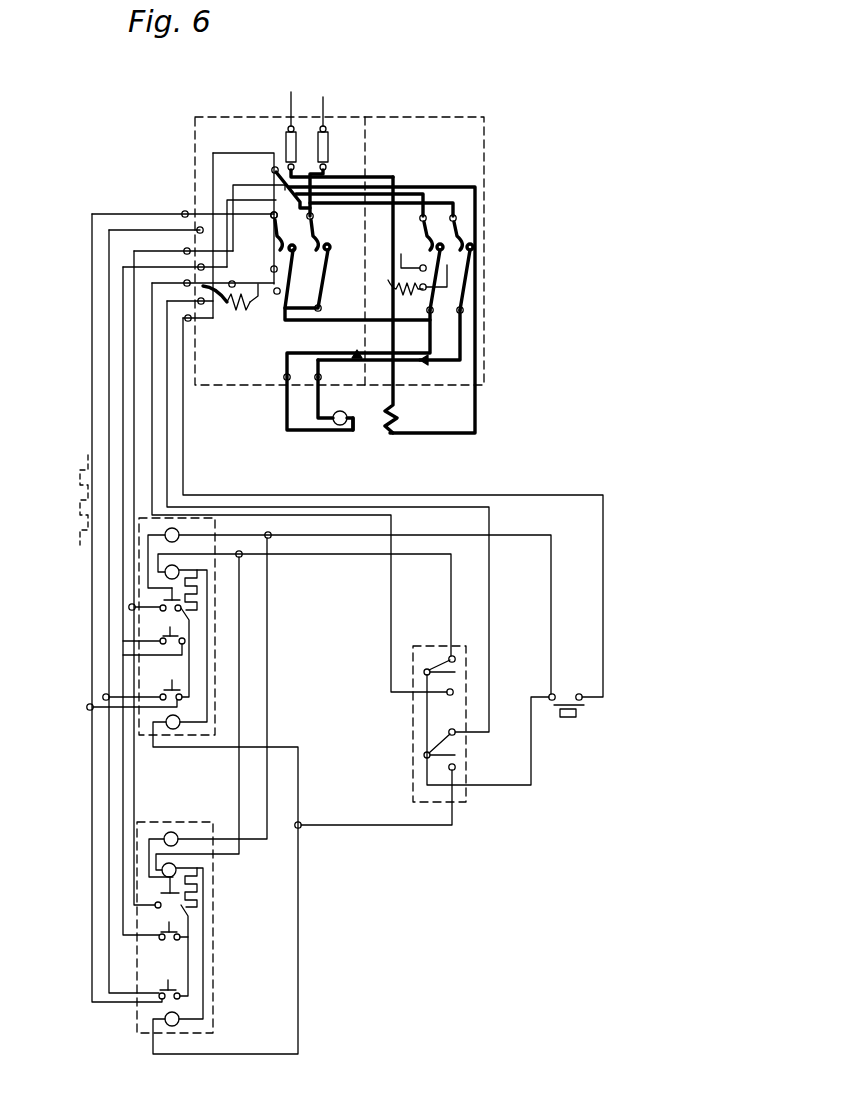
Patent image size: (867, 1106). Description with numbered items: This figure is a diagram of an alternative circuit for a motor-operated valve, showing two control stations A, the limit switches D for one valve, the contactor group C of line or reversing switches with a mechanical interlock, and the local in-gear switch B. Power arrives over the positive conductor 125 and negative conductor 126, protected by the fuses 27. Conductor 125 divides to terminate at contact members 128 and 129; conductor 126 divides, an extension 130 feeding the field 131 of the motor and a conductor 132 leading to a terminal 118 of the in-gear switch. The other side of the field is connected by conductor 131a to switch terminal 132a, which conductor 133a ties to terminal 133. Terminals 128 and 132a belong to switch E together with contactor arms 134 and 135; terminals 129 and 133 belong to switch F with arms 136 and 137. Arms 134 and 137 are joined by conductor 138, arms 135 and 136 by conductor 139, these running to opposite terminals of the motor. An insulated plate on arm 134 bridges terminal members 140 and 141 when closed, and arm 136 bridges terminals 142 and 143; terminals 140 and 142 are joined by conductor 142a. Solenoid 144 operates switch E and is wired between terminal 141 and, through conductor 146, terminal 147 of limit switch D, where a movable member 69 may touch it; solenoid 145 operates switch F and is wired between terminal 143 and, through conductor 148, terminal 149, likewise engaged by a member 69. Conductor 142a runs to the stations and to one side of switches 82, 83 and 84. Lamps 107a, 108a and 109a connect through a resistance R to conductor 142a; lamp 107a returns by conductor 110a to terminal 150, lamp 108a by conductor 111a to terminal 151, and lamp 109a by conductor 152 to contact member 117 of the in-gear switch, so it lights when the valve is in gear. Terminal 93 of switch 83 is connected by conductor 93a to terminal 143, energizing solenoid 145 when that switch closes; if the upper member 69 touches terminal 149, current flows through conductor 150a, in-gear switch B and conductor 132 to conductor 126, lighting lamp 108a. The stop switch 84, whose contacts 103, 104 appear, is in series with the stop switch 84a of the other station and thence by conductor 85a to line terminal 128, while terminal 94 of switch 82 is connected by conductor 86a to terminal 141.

The conductor 126 is at (291, 100).
The conductor 125 is at (325, 106).
The fuses 27 is at (330, 148).
The switch terminal 132a is at (272, 165).
The terminal 133 is at (268, 208).
The conductor extension 130 is at (390, 186).
The contact member 129 is at (458, 219).
The contact member 128 is at (314, 216).
The contactor arm 137 is at (472, 258).
The conductor 133a is at (383, 205).
The terminal 142 is at (420, 266).
The conductor 142a is at (92, 770).
The contactor arm 136 is at (455, 275).
The terminal 143 is at (432, 292).
The contactor arm 135 is at (389, 293).
The conductor 139 is at (424, 360).
The conductor 138 is at (356, 353).
The solenoid 145 is at (428, 305).
The terminal member 140 is at (236, 305).
The terminal member 141 is at (256, 300).
The solenoid 144 is at (215, 325).
The contactor arm 134 is at (280, 300).
The field of the motor 131 is at (398, 418).
The conductor 131a is at (477, 420).
The conductor 85a is at (123, 407).
The conductor 148 is at (152, 428).
The lamp 109a is at (176, 530).
The conductor 146 is at (415, 505).
The conductor 132 is at (600, 495).
The conductor 93a is at (146, 556).
The stop switch 84a is at (186, 630).
The movable member 69 is at (427, 668).
The terminal 151 is at (453, 655).
The terminal 149 is at (455, 690).
The contact member 117 is at (554, 692).
The terminal 118 is at (584, 693).
The terminal 147 is at (456, 735).
The conductor 152 is at (298, 730).
The terminal 150 is at (456, 770).
The conductor 150a is at (525, 790).
The conductor 86a is at (109, 808).
The conductor 111a is at (238, 782).
The lamp 108a is at (153, 863).
The switch 83 is at (152, 903).
The terminal 93 is at (155, 937).
The contact 104 is at (181, 937).
The contact 103 is at (165, 941).
The stop switch 84 is at (164, 960).
The switch 82 is at (181, 995).
The terminal 94 is at (160, 999).
The conductor 110a is at (299, 988).
The lamp 107a is at (176, 1030).
The switch E is at (215, 210).
The contactor group C is at (410, 142).
The switch F is at (440, 216).
The resistance R is at (200, 600).
The control station A is at (190, 630).
The limit switches D is at (462, 675).
The local in-gear switch B is at (580, 702).